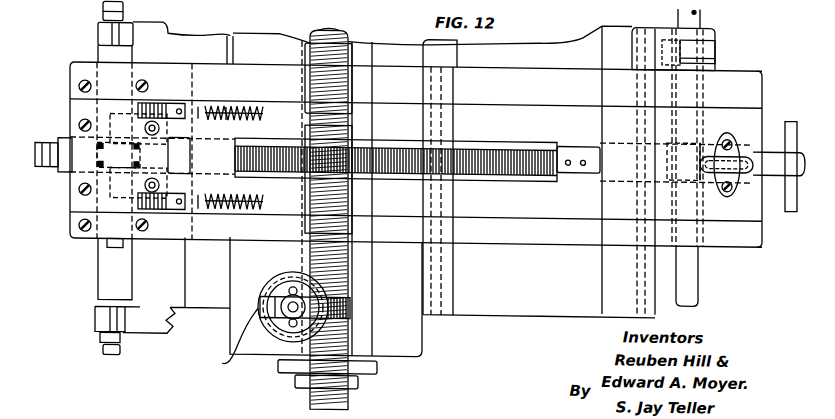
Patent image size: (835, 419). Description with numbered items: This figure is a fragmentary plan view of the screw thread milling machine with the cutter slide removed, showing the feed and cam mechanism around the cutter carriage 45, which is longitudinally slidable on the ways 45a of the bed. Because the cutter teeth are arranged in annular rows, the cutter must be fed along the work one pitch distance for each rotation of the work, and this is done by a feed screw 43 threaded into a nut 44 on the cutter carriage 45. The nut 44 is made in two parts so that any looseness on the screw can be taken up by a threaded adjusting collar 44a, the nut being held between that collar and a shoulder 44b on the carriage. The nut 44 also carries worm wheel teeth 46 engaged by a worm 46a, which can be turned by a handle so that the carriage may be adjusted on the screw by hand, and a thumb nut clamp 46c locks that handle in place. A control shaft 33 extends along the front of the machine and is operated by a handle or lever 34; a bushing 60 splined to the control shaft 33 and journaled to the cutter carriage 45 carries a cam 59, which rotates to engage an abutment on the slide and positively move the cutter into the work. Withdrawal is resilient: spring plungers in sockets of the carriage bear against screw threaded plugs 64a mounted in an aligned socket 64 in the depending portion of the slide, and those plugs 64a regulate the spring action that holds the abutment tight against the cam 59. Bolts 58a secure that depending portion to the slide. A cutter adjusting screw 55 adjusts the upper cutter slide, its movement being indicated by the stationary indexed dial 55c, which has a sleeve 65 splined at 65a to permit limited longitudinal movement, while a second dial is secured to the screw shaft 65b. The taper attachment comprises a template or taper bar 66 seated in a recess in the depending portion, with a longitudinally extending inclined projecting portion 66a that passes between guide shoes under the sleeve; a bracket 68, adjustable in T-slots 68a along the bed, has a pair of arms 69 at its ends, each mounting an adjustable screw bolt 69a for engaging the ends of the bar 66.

The control shaft 33 is at (700, 275).
The handle or lever 34 is at (706, 45).
The feed screw 43 is at (340, 30).
The nut 44 is at (350, 223).
The threaded adjusting collar 44a is at (360, 376).
The shoulder 44b is at (352, 121).
The cutter carriage 45 is at (420, 340).
The ways 45a is at (452, 278).
The worm wheel teeth 46 is at (350, 298).
The worm 46a is at (240, 7).
The thumb nut clamp 46c is at (228, 341).
The cutter adjusting screw 55 is at (528, 142).
The indexed dial 55c is at (789, 112).
The bolts 58a is at (160, 126).
The cam 59 is at (688, 134).
The bushing 60 is at (703, 98).
The socket 64 is at (70, 99).
The screw threaded plugs 64a is at (152, 102).
The sleeve 65 is at (257, 106).
The spline 65a is at (200, 104).
The screw shaft 65b is at (235, 105).
The template or taper bar 66 is at (108, 271).
The inclined projecting portion 66a is at (108, 242).
The bracket 68 is at (172, 331).
The T-slots 68a is at (185, 7).
The arms 69 is at (98, 27).
The screw bolts 69a is at (108, 352).